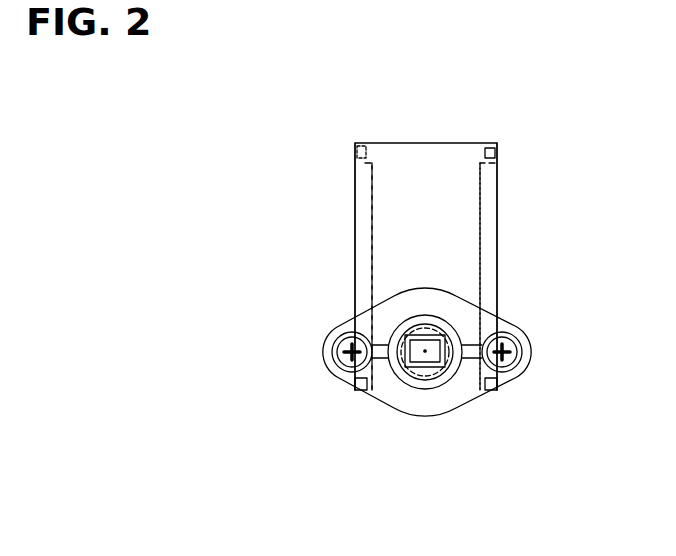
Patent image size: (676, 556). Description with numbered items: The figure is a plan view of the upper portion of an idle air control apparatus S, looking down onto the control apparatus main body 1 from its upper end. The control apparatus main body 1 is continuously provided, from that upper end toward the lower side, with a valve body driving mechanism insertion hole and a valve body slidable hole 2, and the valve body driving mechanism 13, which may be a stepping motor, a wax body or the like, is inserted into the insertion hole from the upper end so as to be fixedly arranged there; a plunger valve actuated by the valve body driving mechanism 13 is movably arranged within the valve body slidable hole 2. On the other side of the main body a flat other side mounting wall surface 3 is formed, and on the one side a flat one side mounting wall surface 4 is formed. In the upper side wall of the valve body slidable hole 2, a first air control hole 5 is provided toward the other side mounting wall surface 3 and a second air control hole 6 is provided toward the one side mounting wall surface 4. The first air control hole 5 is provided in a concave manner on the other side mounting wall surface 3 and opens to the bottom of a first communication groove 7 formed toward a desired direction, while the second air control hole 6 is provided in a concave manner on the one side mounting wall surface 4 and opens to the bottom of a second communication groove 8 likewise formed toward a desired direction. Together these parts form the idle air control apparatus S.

The idle air control apparatus S is at (395, 25).
The control apparatus main body 1 is at (425, 177).
The valve body slidable hole 2 is at (400, 398).
The other side mounting wall surface 3 is at (365, 220).
The one side mounting wall surface 4 is at (497, 191).
The first air control hole 5 is at (372, 378).
The second air control hole 6 is at (477, 383).
The first communication groove 7 is at (355, 189).
The second communication groove 8 is at (485, 237).
The valve body driving mechanism 13 is at (433, 390).